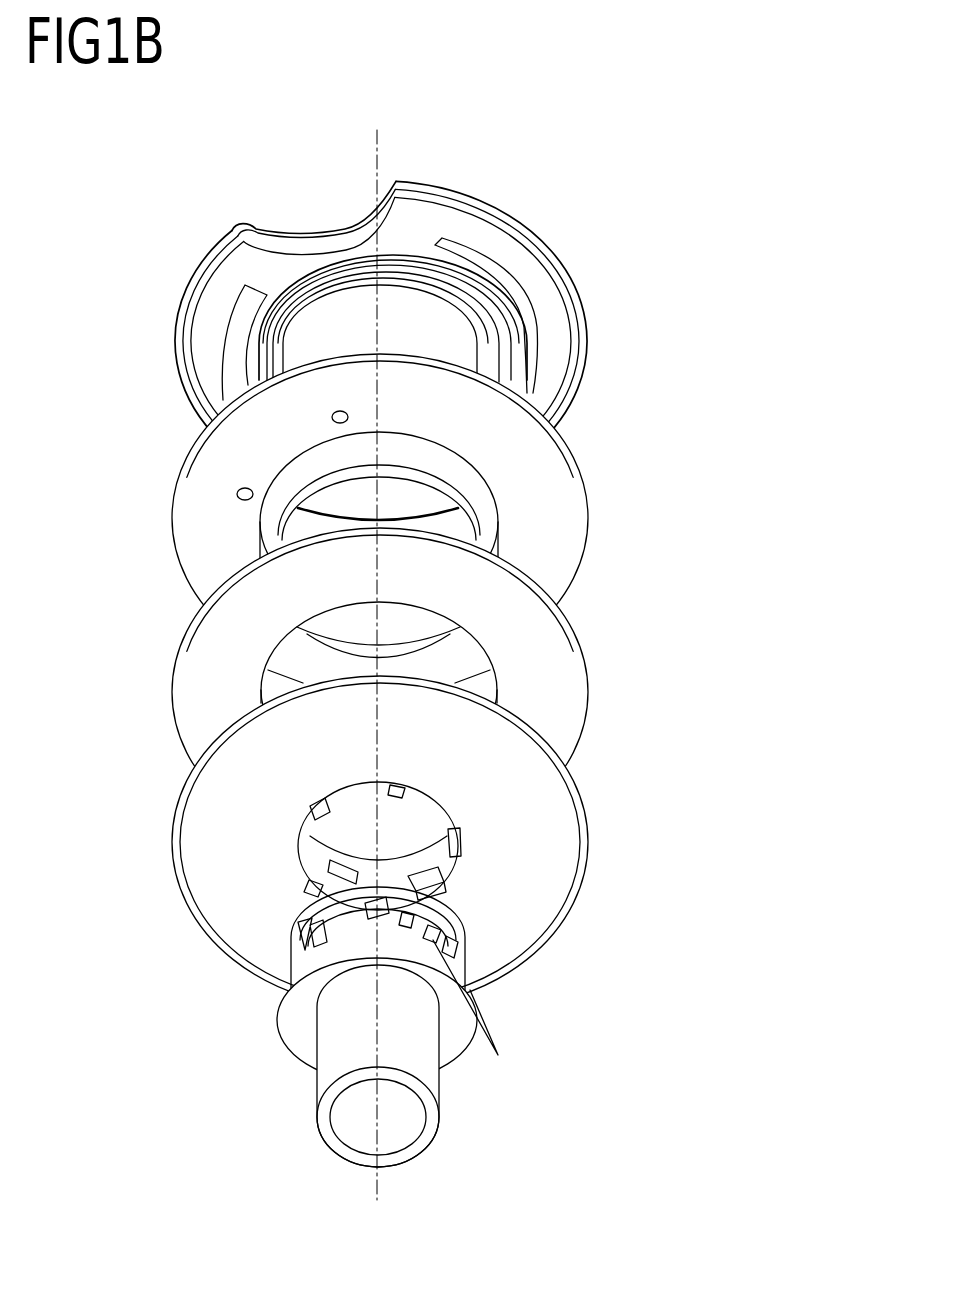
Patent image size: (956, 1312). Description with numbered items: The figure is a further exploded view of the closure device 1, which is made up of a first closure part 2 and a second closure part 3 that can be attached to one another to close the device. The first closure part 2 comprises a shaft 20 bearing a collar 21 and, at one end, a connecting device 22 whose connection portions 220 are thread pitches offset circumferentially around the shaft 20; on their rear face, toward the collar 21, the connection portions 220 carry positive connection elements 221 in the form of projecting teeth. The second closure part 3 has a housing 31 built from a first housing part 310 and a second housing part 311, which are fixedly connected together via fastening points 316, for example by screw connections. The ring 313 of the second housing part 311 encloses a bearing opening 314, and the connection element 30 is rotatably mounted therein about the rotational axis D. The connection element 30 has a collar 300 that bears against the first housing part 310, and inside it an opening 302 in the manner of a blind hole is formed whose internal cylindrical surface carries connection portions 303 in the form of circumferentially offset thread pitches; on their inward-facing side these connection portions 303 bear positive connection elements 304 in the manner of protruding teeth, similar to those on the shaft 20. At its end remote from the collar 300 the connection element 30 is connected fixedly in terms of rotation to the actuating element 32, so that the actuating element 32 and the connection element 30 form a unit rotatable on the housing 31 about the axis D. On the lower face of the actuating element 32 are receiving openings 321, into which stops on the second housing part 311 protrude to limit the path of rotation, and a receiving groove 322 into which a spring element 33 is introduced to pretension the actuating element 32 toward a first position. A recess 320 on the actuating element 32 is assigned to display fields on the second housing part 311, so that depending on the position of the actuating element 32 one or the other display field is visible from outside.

The closure device 1 is at (371, 654).
The first closure part 2 is at (396, 1050).
The shaft 20 is at (323, 1140).
The collar 21 is at (365, 1020).
The connecting device 22 is at (396, 943).
The connection portions 220 is at (465, 940).
The positive connection elements 221 is at (482, 1020).
The second closure part 3 is at (362, 568).
The connection element 30 is at (385, 842).
The collar 300 is at (451, 808).
The opening 302 is at (428, 821).
The connection portions 303 is at (420, 895).
The positive connection elements 304 is at (325, 862).
The housing 31 is at (360, 604).
The first housing part 310 is at (190, 705).
The second housing part 311 is at (373, 517).
The ring 313 is at (467, 497).
The bearing opening 314 is at (422, 492).
The fastening points 316 is at (237, 490).
The actuating element 32 is at (341, 315).
The recess 320 is at (306, 230).
The receiving openings 321 is at (243, 305).
The receiving groove 322 is at (421, 262).
The spring element 33 is at (393, 257).
The rotational axis D is at (381, 147).